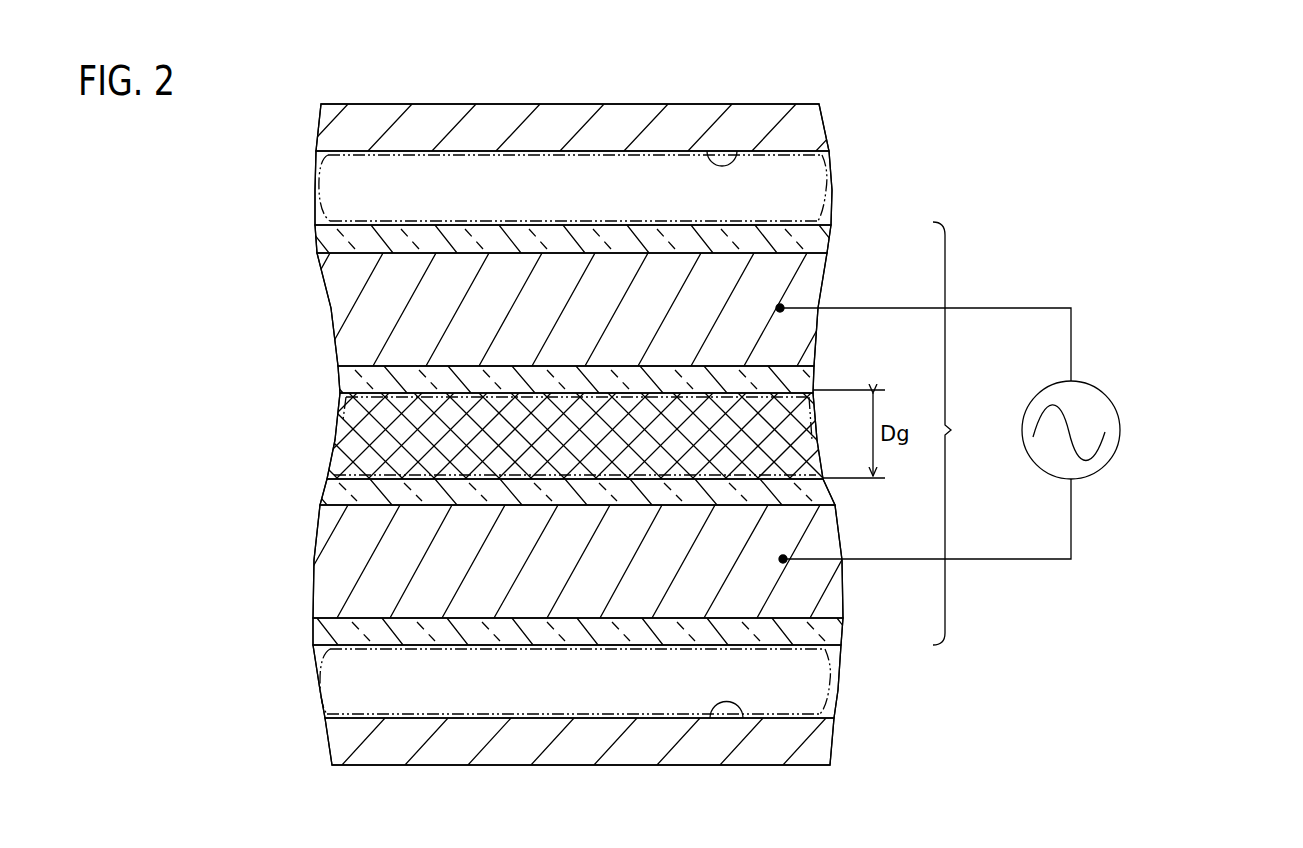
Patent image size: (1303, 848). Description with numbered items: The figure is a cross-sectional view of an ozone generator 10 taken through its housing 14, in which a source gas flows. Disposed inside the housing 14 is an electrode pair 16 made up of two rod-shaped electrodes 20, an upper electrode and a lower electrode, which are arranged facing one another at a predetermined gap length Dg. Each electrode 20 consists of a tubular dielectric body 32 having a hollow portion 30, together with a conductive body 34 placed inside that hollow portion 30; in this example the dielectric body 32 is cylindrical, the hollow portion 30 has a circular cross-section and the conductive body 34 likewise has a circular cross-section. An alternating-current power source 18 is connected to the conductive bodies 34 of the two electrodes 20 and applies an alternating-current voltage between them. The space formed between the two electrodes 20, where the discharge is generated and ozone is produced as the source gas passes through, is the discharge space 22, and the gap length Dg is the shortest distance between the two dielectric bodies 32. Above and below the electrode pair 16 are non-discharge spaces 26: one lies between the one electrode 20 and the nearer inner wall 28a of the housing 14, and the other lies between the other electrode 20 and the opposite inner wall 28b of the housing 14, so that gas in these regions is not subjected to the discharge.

The ozone generator 10 is at (184, 153).
The housing 14 is at (620, 104).
The electrode pair 16 is at (959, 433).
The alternating-current power source 18 is at (1106, 394).
The electrode 20 is at (578, 435).
The discharge space 22 is at (335, 438).
The non-discharge space 26 is at (838, 190).
The inner wall 28a is at (737, 158).
The inner wall 28b is at (737, 703).
The hollow portion 30 is at (578, 435).
The dielectric body 32 is at (332, 240).
The conductive body 34 is at (360, 330).